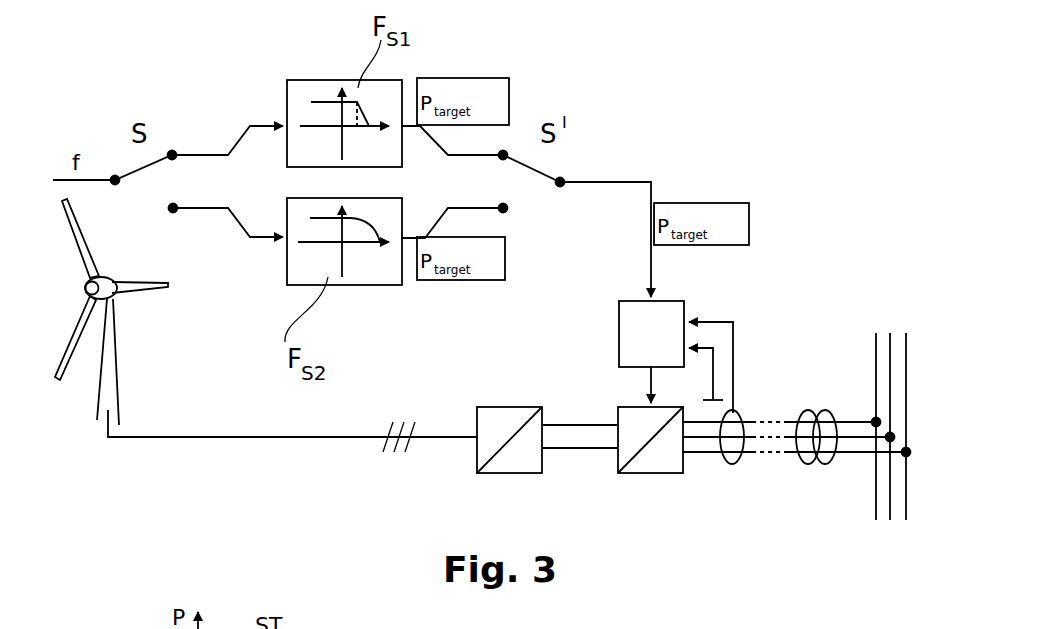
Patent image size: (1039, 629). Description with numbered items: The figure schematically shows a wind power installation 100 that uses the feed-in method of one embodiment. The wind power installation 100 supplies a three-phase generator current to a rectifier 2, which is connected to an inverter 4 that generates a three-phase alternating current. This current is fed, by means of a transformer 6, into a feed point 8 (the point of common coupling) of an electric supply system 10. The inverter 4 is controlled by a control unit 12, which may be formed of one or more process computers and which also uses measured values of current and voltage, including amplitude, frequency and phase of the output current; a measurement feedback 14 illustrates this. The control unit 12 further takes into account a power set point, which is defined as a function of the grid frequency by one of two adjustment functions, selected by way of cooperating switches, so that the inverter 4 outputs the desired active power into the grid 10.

The rectifier 2 is at (515, 407).
The inverter 4 is at (647, 475).
The transformer 6 is at (817, 470).
The feed point 8 is at (858, 396).
The electric supply system 10 is at (877, 535).
The control unit 12 is at (619, 322).
The measurement feedback 14 is at (754, 302).
The wind power installation 100 is at (122, 360).